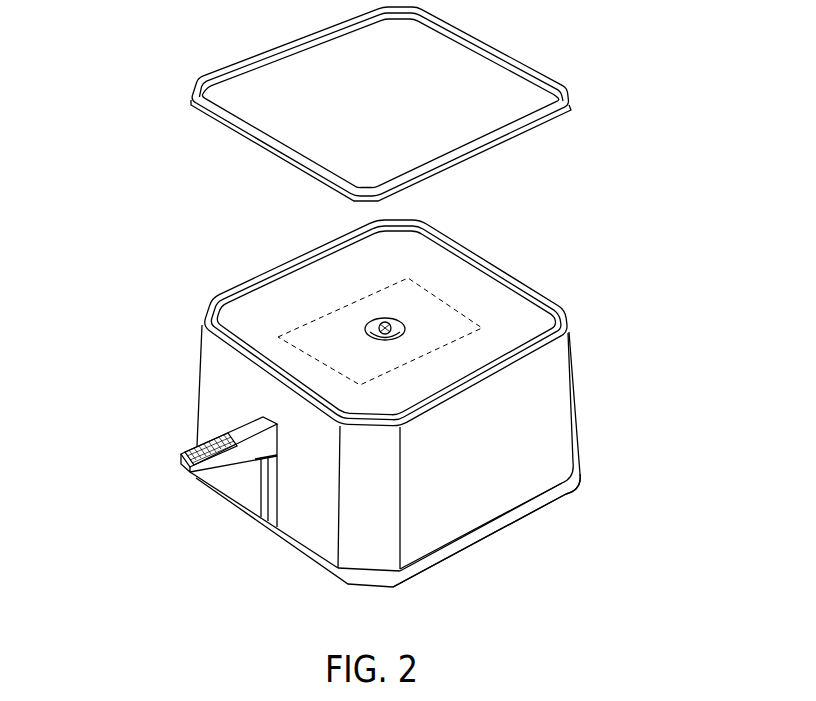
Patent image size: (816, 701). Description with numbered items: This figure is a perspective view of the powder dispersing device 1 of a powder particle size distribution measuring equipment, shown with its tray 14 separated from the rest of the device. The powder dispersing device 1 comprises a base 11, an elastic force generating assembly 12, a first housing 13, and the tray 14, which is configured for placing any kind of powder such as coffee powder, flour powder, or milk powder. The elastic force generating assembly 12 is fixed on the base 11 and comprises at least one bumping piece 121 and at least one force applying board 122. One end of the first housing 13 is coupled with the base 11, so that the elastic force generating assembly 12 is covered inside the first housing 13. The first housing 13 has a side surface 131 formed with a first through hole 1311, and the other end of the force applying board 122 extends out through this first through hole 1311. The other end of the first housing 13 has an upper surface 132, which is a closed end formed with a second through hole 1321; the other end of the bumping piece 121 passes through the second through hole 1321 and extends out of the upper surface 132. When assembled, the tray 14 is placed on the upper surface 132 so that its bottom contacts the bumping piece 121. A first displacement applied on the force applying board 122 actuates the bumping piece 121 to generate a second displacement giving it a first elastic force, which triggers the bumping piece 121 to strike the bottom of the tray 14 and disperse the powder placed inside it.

The powder dispersing device 1 is at (113, 55).
The base 11 is at (553, 488).
The elastic force generating assembly 12 is at (380, 368).
The bumping piece 121 is at (404, 322).
The force applying board 122 is at (177, 462).
The first housing 13 is at (572, 390).
The side surface 131 is at (228, 410).
The first through hole 1311 is at (265, 527).
The upper surface 132 is at (282, 305).
The second through hole 1321 is at (405, 330).
The tray 14 is at (458, 100).